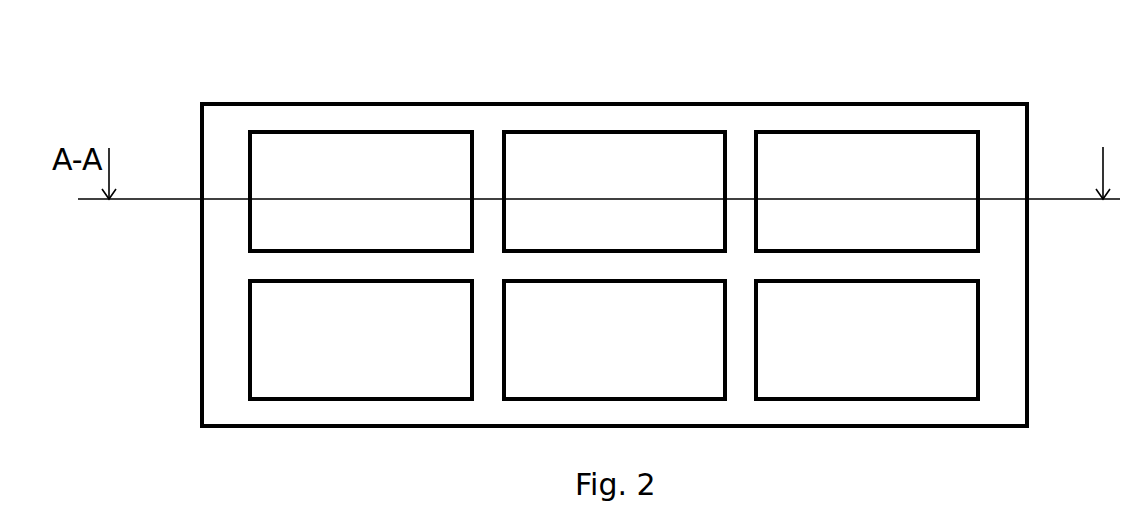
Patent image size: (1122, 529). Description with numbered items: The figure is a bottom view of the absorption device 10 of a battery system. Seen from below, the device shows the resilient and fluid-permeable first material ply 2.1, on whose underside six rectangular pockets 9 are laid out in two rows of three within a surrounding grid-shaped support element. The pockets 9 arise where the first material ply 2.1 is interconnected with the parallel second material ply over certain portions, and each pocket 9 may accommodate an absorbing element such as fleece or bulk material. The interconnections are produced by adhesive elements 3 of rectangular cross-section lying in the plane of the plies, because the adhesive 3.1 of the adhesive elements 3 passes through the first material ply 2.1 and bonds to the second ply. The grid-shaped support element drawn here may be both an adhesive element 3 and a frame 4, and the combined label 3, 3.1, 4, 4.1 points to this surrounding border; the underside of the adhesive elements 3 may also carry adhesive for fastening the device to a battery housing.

The absorption device 10 is at (142, 70).
The first material ply 2.1 is at (327, 168).
The pockets 9 is at (397, 165).
The adhesive elements 3 is at (614, 220).
The adhesive 3.1 is at (614, 220).
The frame 4 is at (614, 220).
The cover layer surface 4.1 is at (585, 115).